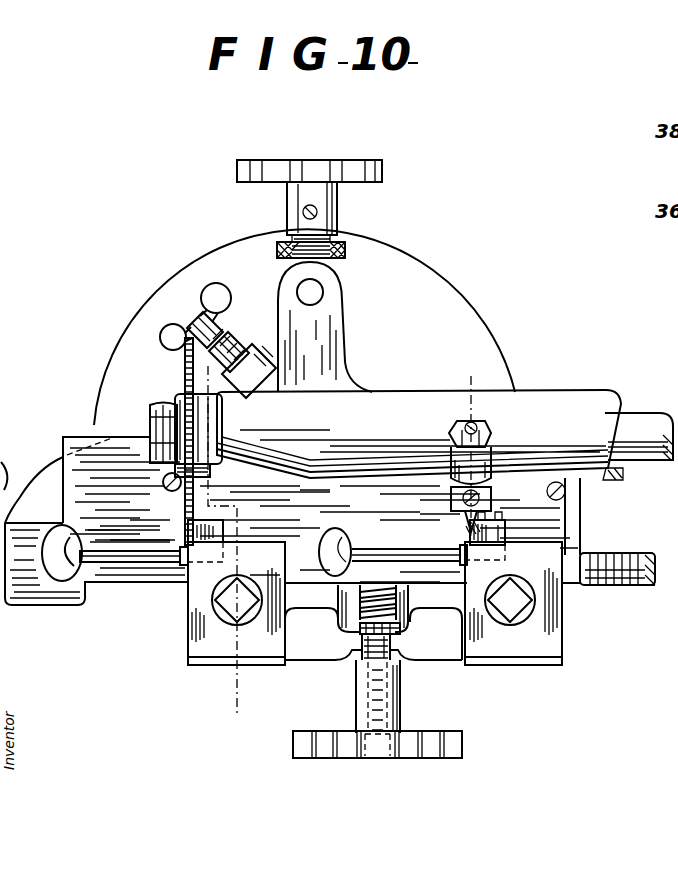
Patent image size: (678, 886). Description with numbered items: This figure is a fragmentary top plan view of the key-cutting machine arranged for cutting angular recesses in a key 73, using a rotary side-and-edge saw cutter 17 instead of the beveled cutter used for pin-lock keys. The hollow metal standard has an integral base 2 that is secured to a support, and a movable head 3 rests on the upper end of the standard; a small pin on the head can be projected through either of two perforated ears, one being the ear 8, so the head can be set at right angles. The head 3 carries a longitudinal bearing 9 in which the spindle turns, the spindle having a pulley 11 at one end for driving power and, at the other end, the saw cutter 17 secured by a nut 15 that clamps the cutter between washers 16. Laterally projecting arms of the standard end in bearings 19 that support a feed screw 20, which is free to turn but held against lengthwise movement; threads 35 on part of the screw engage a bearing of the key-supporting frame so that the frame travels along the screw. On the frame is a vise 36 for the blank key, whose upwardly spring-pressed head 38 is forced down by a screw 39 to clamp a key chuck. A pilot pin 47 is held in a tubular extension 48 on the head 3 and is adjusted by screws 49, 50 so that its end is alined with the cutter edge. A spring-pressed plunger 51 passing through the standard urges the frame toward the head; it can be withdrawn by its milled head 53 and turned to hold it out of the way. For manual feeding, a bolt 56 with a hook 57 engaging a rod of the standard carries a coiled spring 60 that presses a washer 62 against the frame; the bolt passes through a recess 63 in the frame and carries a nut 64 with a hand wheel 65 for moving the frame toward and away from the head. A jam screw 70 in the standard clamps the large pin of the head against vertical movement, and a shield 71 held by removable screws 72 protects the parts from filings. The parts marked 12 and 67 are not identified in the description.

The base 2 is at (291, 342).
The movable head 3 is at (411, 486).
The perforated ear 8 is at (338, 340).
The longitudinal bearing 9 is at (634, 432).
The pulley 11 is at (240, 713).
The bolt axis 12 is at (471, 376).
The nut 15 is at (165, 432).
The washers 16 is at (176, 410).
The cutter 17 is at (184, 358).
The bearings 19 is at (65, 590).
The feed screw 20 is at (618, 560).
The threads 35 is at (633, 586).
The vise 36 is at (198, 645).
The spring-pressed head 38 is at (200, 622).
The screw 39 is at (240, 596).
The pilot pin 47 is at (462, 514).
The tubular extension 48 is at (490, 490).
The screw 49 is at (463, 502).
The screw 50 is at (451, 424).
The plunger 51 is at (432, 645).
The milled head 53 is at (278, 252).
The bolt 56 is at (398, 662).
The hook 57 is at (540, 652).
The coiled spring 60 is at (396, 608).
The washer 62 is at (362, 632).
The recess 63 is at (360, 660).
The nut 64 is at (400, 718).
The hand wheel 65 is at (306, 746).
The stem 67 is at (343, 258).
The jam screw 70 is at (168, 326).
The shield 71 is at (162, 572).
The screws 72 is at (167, 492).
The key 73 is at (500, 532).